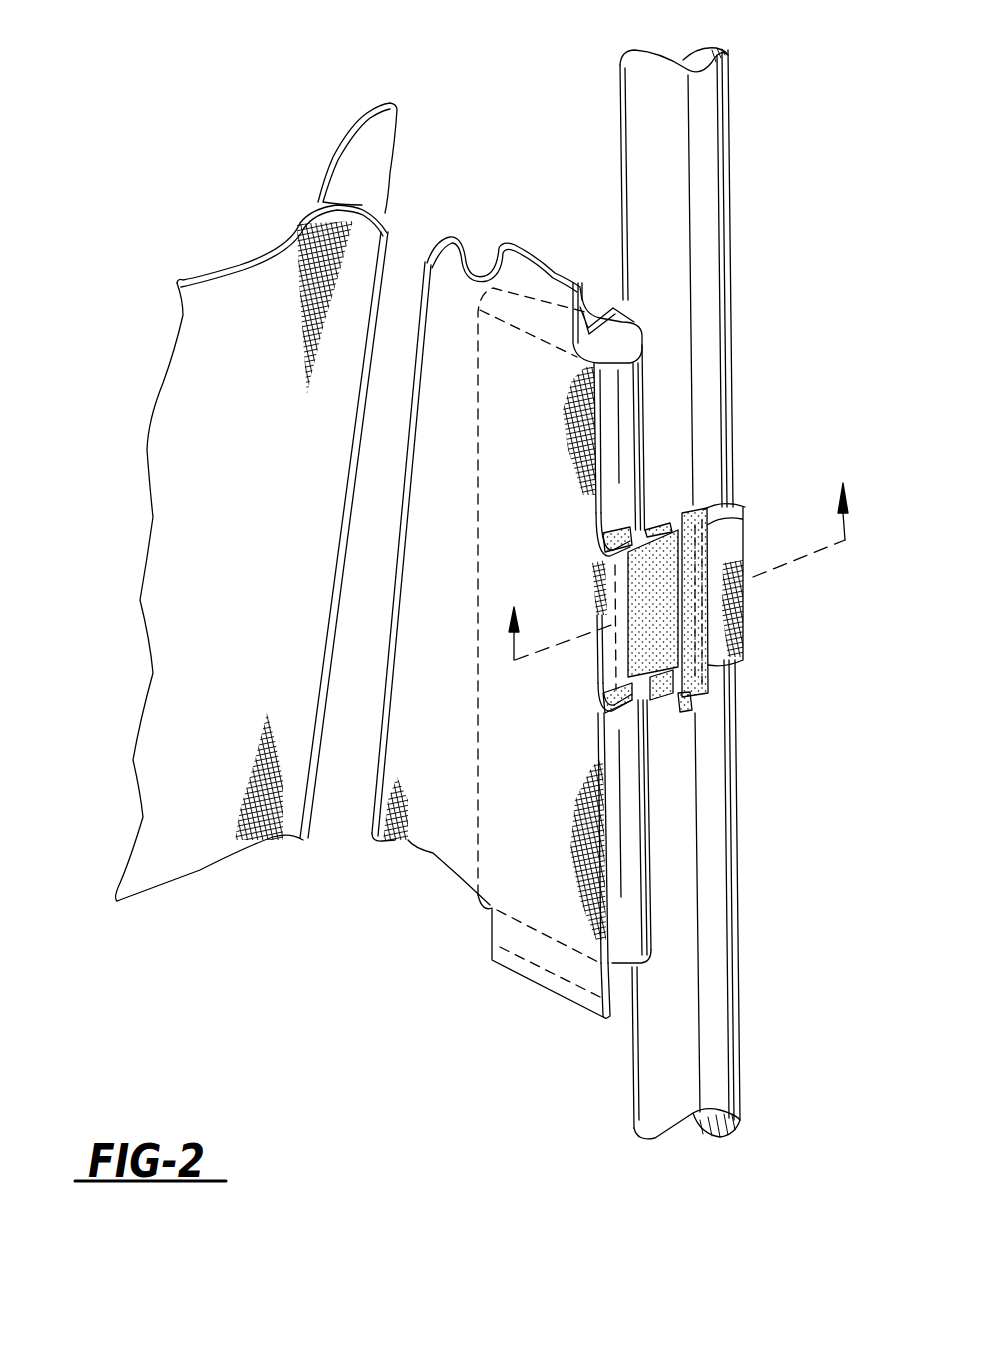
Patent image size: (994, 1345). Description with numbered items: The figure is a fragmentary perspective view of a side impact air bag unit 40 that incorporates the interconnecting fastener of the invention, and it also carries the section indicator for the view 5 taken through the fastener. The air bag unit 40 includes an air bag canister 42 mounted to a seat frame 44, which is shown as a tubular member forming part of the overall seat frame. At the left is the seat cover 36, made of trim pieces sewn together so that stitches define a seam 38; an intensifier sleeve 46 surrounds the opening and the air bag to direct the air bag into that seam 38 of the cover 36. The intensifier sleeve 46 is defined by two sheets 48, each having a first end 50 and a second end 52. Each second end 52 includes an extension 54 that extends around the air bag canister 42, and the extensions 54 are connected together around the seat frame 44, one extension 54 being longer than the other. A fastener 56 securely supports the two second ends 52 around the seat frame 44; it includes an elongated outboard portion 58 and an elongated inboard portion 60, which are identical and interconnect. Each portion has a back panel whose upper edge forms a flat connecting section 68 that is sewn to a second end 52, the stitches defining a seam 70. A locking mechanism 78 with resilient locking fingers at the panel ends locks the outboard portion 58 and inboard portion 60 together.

The cover 36 is at (367, 143).
The seam 38 is at (357, 207).
The air bag unit 40 is at (243, 210).
The air bag canister 42 is at (623, 384).
The seat frame 44 is at (710, 940).
The intensifier sleeve 46 is at (547, 257).
The sheet 48 is at (603, 312).
The first end 50 is at (425, 545).
The second end 52 is at (593, 458).
The extension 54 is at (612, 607).
The fastener 56 is at (697, 783).
The outboard portion 58 is at (660, 562).
The inboard portion 60 is at (667, 708).
The flat connecting section 68 is at (695, 517).
The seam 70 is at (705, 577).
The locking mechanism 78 is at (634, 523).
The section line 5- 5 is at (677, 597).